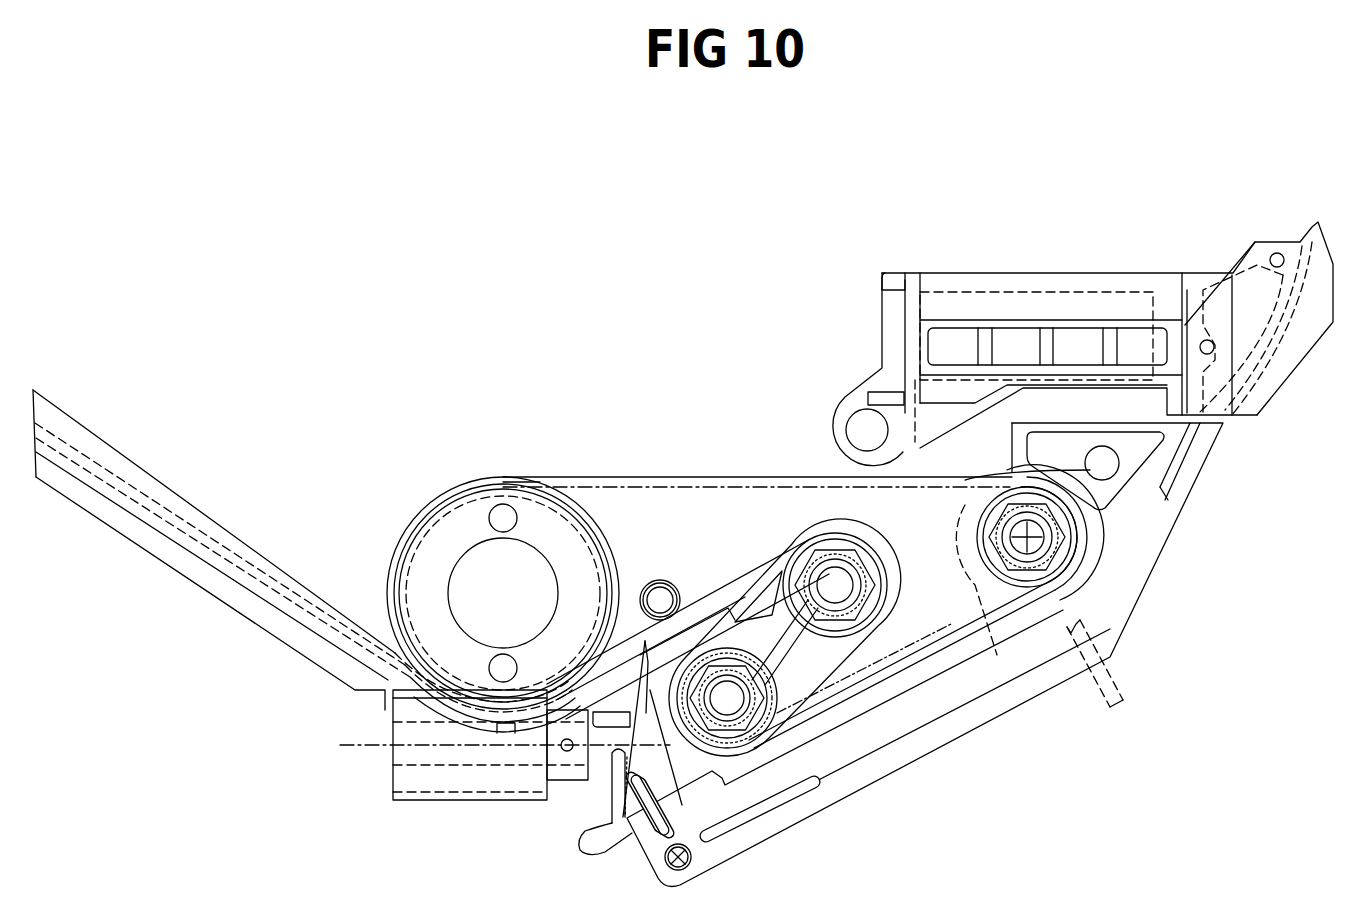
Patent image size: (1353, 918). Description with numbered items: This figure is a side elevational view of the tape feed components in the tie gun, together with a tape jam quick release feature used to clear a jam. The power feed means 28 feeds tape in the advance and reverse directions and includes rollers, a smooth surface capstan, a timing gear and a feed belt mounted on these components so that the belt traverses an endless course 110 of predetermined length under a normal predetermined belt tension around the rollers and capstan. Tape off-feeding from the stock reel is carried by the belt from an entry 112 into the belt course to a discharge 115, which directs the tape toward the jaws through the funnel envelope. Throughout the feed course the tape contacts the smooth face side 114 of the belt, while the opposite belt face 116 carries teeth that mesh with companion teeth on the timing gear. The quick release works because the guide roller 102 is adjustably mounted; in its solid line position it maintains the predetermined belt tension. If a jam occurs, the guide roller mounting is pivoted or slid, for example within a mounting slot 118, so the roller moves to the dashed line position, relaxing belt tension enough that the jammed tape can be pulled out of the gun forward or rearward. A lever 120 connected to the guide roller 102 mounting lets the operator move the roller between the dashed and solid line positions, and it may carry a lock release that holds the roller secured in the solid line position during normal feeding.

The tape feed means 28 is at (615, 445).
The guide roller 102 is at (1027, 584).
The endless course 110 is at (588, 484).
The entry 112 is at (372, 620).
The smooth face side 114 is at (672, 477).
The discharge 115 is at (1097, 543).
The opposite belt face 116 is at (740, 500).
The mounting slot 118 is at (1028, 530).
The lever 120 is at (1107, 687).